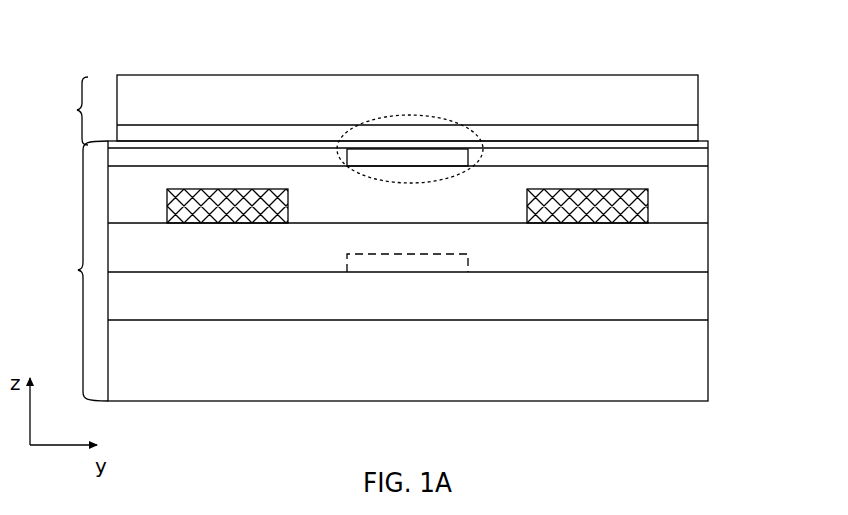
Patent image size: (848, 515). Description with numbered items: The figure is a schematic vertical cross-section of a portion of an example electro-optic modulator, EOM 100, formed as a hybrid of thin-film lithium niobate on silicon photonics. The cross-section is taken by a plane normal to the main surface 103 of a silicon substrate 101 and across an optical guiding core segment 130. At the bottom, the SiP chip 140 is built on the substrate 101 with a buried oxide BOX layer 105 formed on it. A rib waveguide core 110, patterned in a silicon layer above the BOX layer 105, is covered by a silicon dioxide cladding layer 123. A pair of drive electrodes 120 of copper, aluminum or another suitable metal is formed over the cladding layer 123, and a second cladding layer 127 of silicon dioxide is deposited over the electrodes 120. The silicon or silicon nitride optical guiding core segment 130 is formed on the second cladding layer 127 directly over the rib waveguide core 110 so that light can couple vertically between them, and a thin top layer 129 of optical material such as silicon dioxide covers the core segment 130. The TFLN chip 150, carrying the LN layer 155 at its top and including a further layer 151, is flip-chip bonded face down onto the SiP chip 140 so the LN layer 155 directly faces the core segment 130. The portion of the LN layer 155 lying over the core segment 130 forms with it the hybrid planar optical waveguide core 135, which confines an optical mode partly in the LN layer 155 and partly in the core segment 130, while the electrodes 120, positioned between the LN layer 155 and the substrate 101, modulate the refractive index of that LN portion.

The EOM 100 is at (427, 42).
The upper layer 151 is at (475, 109).
The TFLN chip 150 is at (60, 111).
The LN layer 155 is at (701, 132).
The SiP chip 140 is at (370, 271).
The second cladding layer 127 is at (709, 190).
The cladding layer 123 is at (709, 247).
The drive electrodes 120 is at (227, 222).
The optical guiding core segment 130 is at (408, 166).
The hybrid planar optical waveguide core 135 is at (457, 118).
The top layer 129 is at (337, 145).
The rib waveguide core 110 is at (378, 255).
The BOX layer 105 is at (427, 307).
The substrate 101 is at (427, 372).
The main surface 103 is at (483, 320).